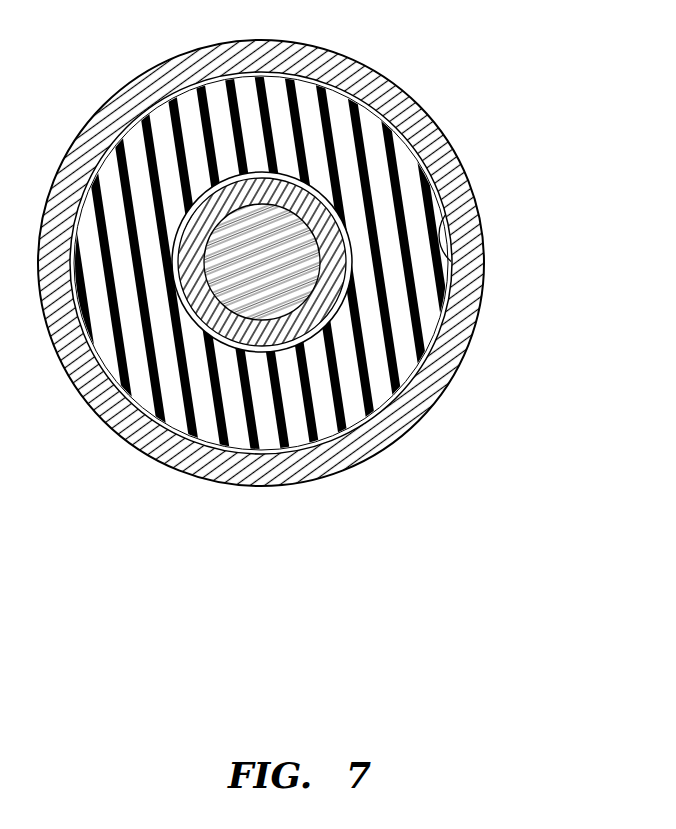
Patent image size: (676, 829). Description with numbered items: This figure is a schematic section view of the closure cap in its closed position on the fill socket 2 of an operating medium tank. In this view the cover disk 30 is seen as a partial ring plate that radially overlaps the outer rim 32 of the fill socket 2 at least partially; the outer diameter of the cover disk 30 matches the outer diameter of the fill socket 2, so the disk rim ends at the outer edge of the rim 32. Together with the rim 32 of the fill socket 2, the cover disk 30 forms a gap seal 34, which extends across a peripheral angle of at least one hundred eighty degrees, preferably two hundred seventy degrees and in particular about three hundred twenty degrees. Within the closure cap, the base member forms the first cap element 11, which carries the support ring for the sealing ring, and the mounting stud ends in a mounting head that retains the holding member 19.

The fill socket 2 is at (468, 322).
The first cap element 11 is at (232, 240).
The holding member 19 is at (305, 202).
The cover disk 30 is at (407, 170).
The rim of the fill socket 32 is at (448, 207).
The gap seal 34 is at (437, 343).